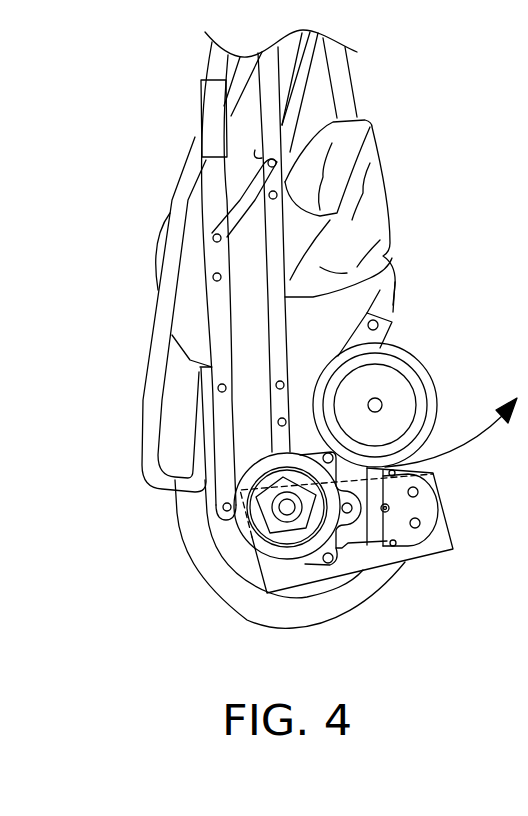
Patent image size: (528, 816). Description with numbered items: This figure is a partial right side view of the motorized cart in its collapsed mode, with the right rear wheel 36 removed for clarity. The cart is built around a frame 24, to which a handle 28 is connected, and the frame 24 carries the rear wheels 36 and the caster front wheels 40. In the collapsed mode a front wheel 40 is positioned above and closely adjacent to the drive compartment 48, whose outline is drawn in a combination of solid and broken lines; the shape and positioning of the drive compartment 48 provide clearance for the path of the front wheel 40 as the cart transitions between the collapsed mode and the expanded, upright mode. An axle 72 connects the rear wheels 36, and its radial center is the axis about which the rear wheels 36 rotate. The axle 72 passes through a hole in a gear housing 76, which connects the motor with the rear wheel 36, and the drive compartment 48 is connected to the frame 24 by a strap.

The frame 24 is at (208, 68).
The handle 28 is at (180, 498).
The rear wheel 36 is at (177, 515).
The front wheel 40 is at (413, 354).
The drive compartment 48 is at (262, 580).
The axle 72 is at (283, 510).
The gear housing 76 is at (249, 527).